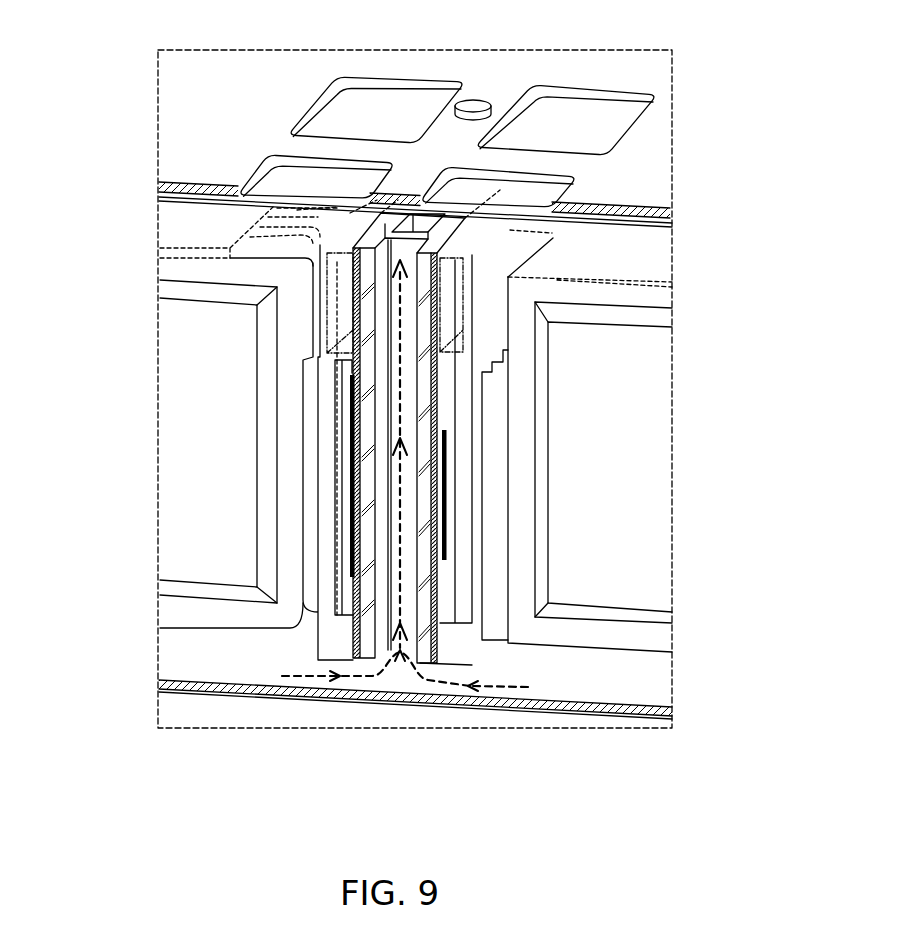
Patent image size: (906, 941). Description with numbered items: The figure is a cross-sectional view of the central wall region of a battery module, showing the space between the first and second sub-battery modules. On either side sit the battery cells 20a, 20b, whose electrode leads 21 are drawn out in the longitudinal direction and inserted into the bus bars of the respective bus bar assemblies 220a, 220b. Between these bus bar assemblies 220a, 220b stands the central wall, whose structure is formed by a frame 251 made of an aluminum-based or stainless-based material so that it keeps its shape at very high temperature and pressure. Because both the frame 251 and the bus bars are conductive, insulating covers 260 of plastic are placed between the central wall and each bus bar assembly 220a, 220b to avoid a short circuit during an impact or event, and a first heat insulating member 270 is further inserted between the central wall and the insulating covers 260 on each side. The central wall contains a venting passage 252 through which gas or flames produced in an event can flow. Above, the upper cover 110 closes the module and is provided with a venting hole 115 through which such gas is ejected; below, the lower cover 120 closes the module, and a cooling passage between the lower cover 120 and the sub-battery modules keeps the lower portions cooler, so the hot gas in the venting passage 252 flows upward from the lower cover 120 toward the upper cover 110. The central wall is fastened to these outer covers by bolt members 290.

The upper cover 110 is at (655, 177).
The lower cover 120 is at (220, 692).
The venting hole 115 is at (575, 107).
The bolt member 290 is at (476, 100).
The insulating cover 260 is at (487, 222).
The venting passage 252 is at (440, 640).
The frame 251 is at (450, 633).
The first heat insulating member 270 is at (360, 640).
The bus bar assembly 220a is at (333, 655).
The bus bar assembly 220b is at (463, 542).
The electrode lead 21 is at (495, 600).
The battery cell 20a is at (163, 268).
The battery cell 20b is at (655, 300).